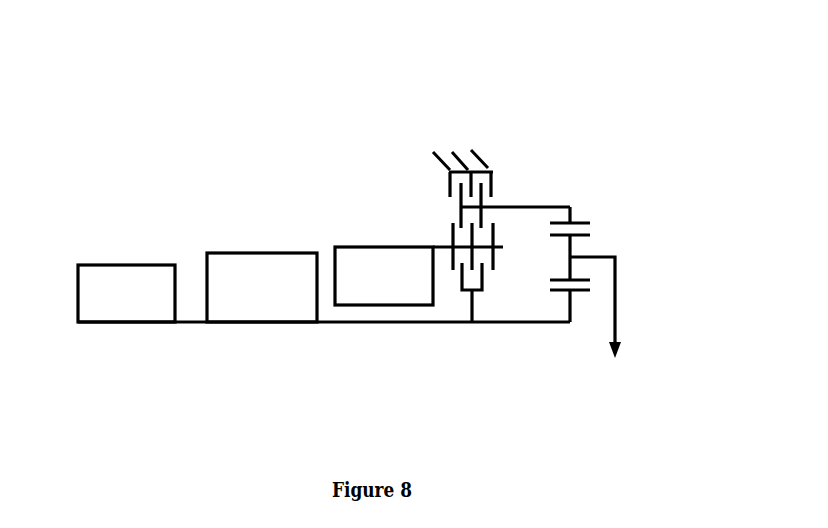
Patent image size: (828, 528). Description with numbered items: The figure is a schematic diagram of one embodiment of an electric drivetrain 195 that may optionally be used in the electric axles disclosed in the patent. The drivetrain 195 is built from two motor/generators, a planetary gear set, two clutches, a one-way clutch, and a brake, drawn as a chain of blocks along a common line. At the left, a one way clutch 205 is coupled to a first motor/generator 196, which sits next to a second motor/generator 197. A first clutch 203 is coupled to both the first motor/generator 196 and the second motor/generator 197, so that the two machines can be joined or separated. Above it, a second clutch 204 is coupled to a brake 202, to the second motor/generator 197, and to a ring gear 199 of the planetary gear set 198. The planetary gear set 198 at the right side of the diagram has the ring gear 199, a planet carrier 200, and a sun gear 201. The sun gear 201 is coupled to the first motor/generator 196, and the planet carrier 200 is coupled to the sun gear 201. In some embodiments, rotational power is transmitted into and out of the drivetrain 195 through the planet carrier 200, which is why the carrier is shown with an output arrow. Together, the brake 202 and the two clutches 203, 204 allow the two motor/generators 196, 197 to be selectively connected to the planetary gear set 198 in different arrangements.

The electric drivetrain 195 is at (209, 84).
The one way clutch 205 is at (108, 265).
The first motor/generator 196 is at (258, 253).
The second motor/generator 197 is at (352, 247).
The second clutch 204 is at (452, 206).
The brake 202 is at (493, 172).
The first clutch 203 is at (483, 288).
The ring gear 199 is at (598, 212).
The planet carrier 200 is at (583, 248).
The sun gear 201 is at (582, 323).
The planetary gear set 198 is at (570, 360).